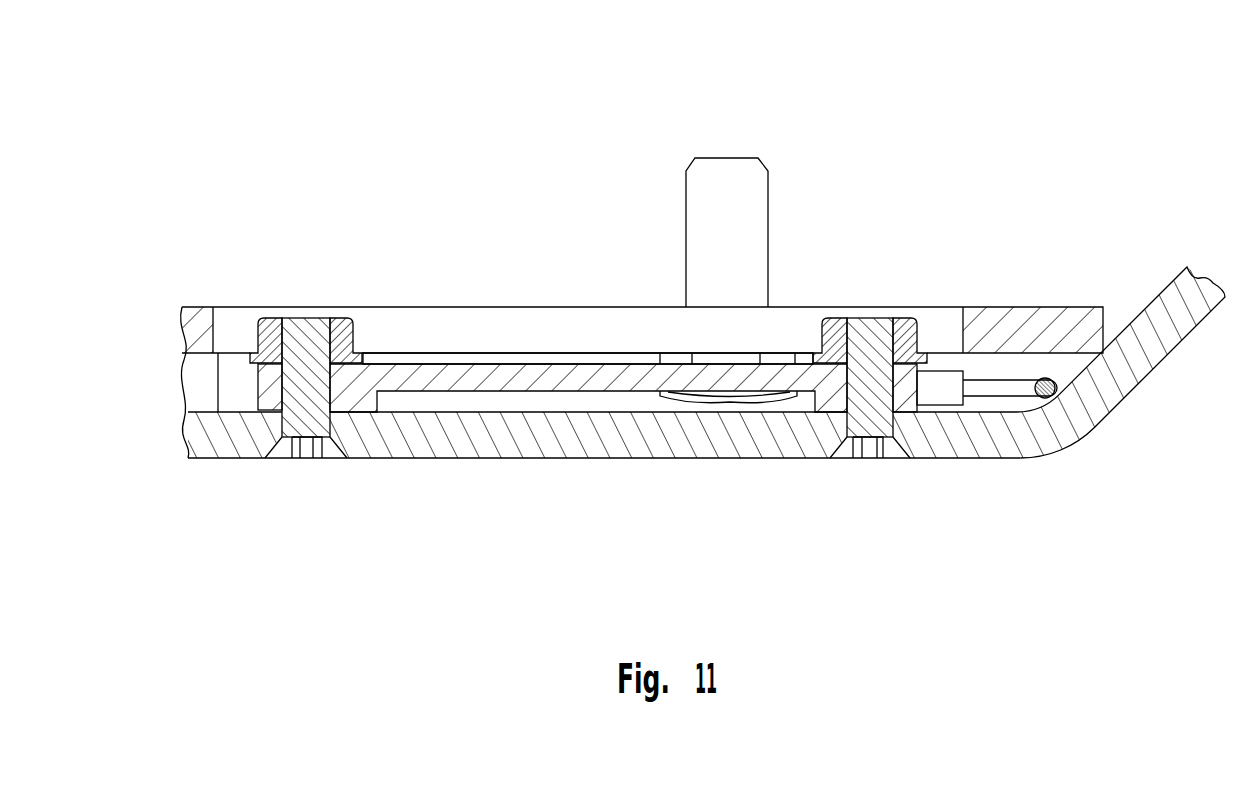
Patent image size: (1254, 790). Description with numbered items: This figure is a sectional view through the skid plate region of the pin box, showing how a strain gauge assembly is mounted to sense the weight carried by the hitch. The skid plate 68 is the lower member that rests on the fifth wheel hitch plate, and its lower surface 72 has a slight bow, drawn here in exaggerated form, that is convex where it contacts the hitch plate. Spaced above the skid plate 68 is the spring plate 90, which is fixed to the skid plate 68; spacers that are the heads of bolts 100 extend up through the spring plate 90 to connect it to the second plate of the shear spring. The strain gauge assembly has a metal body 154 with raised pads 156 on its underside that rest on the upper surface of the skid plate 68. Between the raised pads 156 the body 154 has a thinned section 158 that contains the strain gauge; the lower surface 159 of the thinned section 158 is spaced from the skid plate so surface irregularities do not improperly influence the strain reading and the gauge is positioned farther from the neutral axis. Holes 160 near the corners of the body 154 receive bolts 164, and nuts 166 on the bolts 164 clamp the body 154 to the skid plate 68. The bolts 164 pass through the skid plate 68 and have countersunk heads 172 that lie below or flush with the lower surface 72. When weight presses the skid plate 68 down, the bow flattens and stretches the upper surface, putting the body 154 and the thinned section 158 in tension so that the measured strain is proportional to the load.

The skid plate 68 is at (706, 445).
The lower surface 72 is at (495, 460).
The spring plate 90 is at (1063, 307).
The bolt 100 is at (727, 157).
The body 154 is at (377, 365).
The raised pads 156 is at (365, 458).
The thinned section 158 is at (588, 353).
The lower surface 159 is at (573, 392).
The holes 160 is at (280, 387).
The bolts 164 is at (307, 318).
The nuts 166 is at (272, 318).
The countersunk heads 172 is at (280, 460).